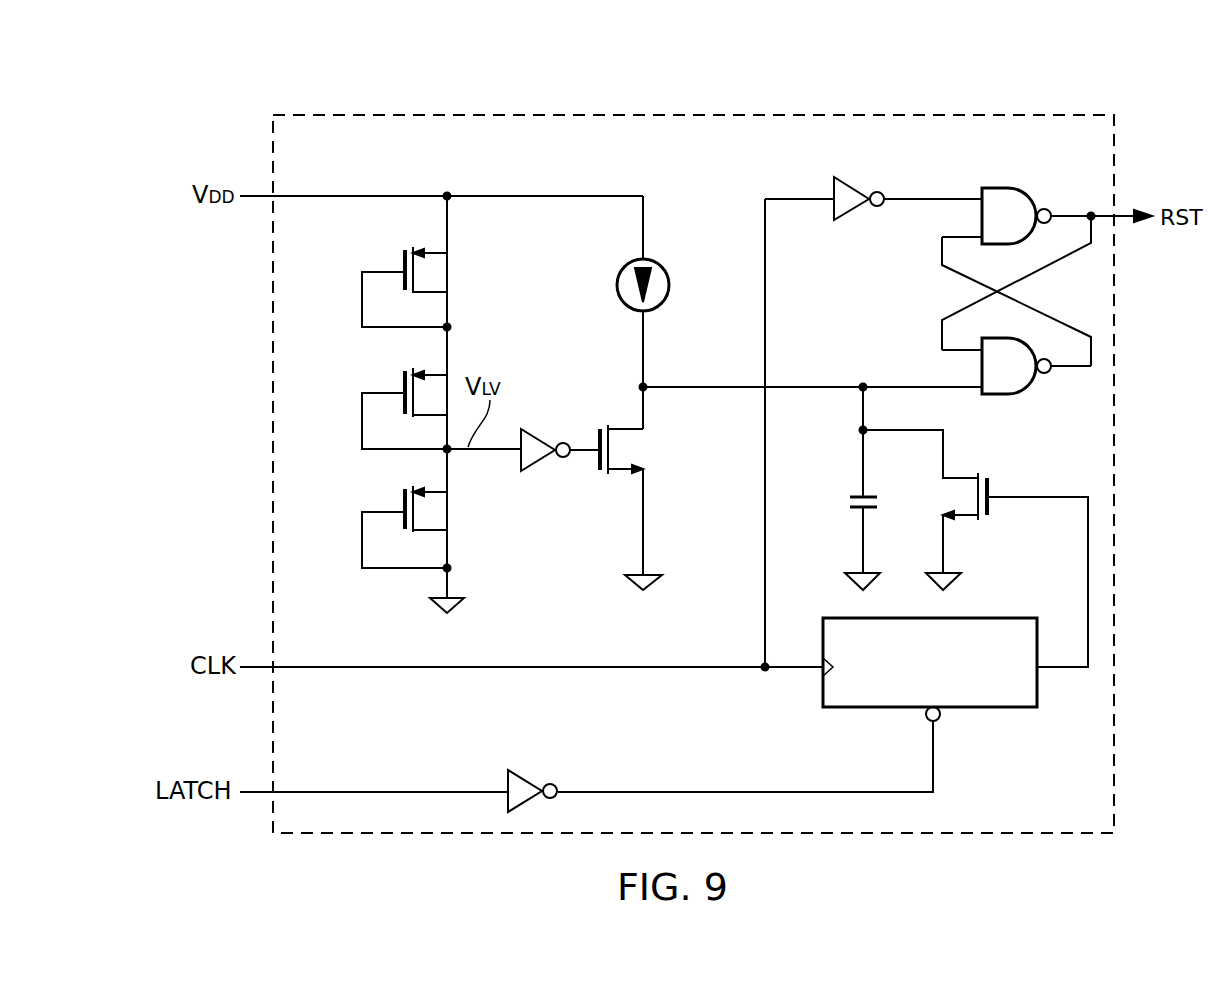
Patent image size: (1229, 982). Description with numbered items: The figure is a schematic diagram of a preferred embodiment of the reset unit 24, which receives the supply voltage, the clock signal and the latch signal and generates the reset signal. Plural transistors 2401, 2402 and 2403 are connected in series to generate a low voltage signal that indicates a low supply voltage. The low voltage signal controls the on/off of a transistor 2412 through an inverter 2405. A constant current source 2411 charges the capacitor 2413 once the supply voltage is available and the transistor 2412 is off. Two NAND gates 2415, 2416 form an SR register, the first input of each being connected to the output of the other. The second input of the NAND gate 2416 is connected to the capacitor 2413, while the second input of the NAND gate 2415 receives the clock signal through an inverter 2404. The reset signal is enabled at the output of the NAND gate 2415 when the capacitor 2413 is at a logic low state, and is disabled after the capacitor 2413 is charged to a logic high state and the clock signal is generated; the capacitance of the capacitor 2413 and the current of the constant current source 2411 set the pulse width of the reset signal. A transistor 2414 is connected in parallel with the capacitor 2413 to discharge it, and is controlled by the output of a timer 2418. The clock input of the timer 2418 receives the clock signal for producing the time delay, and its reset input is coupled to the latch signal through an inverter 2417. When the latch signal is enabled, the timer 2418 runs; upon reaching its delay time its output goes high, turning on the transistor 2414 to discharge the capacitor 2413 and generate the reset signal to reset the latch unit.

The reset unit 24 is at (1140, 55).
The transistor 2401 is at (445, 271).
The transistor 2402 is at (390, 378).
The transistor 2403 is at (445, 510).
The inverter 2404 is at (850, 181).
The inverter 2405 is at (537, 430).
The constant current source 2411 is at (672, 287).
The transistor 2412 is at (647, 452).
The capacitor 2413 is at (848, 502).
The transistor 2414 is at (997, 517).
The NAND gate 2415 is at (1003, 185).
The NAND gate 2416 is at (1010, 398).
The inverter 2417 is at (525, 772).
The timer 2418 is at (1000, 715).